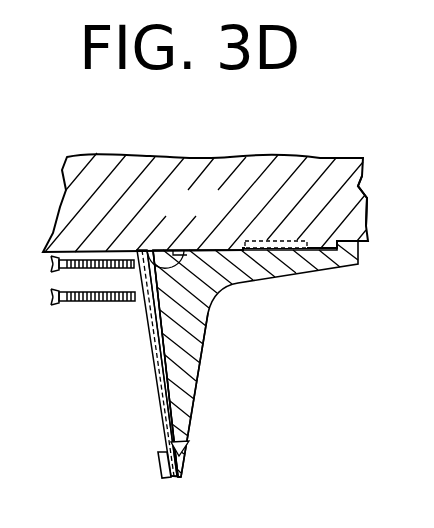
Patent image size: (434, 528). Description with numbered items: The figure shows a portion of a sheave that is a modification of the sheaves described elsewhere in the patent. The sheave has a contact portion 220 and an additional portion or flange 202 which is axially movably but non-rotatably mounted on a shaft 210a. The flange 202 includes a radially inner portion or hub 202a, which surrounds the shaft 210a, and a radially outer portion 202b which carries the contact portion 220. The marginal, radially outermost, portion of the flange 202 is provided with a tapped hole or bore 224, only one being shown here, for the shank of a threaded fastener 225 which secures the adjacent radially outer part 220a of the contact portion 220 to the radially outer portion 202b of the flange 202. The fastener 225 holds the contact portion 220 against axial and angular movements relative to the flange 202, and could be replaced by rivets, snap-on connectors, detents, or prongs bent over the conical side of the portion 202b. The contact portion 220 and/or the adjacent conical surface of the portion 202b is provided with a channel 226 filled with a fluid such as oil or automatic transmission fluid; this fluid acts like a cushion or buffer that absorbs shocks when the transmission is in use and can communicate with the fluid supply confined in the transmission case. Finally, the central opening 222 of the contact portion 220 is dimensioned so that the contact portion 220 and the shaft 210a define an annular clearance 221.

The shaft 210a is at (155, 177).
The annular clearance 221 is at (362, 192).
The central opening 222 is at (186, 250).
The radially inner portion or hub 202a is at (250, 273).
The radially outer portion 202b is at (185, 377).
The contact portion 220 is at (148, 348).
The channel 226 is at (146, 322).
The radially outer part of the contact portion 220a is at (189, 441).
The tapped hole or bore 224 is at (179, 474).
The threaded fastener 225 is at (160, 466).
The additional portion or flange 202 is at (129, 428).